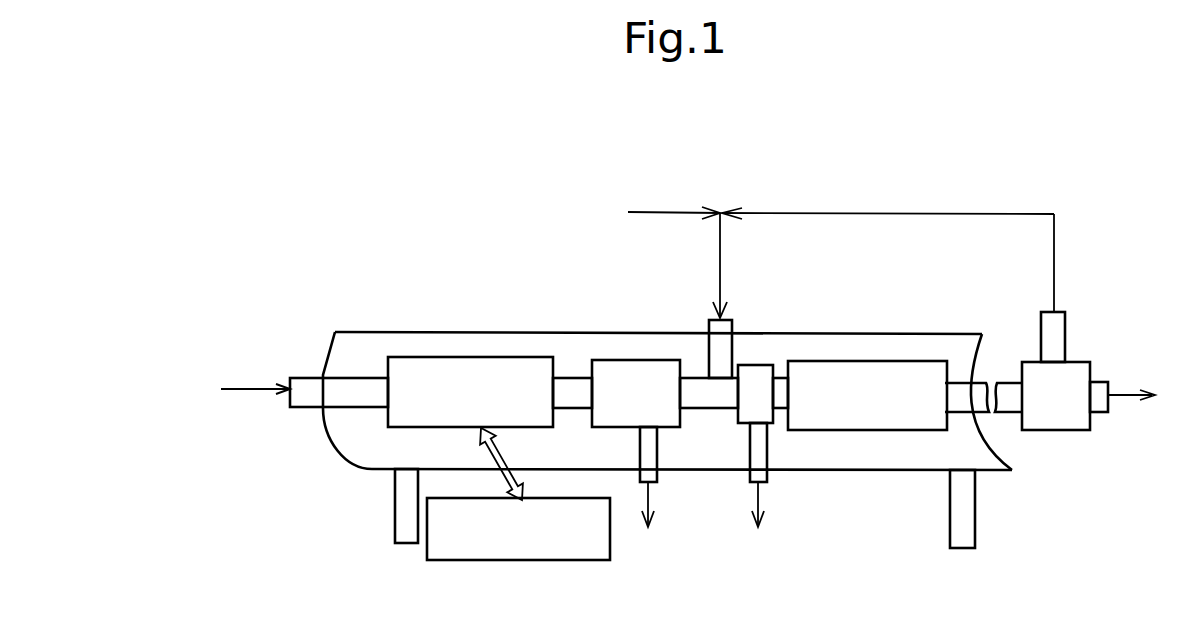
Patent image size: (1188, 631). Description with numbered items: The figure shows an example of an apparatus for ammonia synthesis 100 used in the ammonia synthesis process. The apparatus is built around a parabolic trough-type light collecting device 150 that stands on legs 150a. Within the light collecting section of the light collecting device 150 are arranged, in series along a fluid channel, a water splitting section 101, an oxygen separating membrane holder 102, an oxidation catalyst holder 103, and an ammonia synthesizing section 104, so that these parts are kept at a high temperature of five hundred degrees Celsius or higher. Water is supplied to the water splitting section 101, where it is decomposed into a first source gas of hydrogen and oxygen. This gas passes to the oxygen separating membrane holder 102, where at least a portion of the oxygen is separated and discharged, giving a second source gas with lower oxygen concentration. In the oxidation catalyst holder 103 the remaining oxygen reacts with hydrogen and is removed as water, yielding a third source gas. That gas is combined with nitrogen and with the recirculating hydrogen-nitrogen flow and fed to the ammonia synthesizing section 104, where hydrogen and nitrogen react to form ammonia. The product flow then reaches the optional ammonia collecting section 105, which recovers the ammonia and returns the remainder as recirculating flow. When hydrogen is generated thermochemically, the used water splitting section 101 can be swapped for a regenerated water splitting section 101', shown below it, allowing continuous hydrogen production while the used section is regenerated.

The apparatus for ammonia synthesis 100 is at (404, 278).
The parabolic trough-type light collecting device 150 is at (353, 340).
The legs 150a is at (405, 523).
The water splitting section 101 is at (470, 348).
The regenerated water splitting section 101' is at (522, 555).
The oxygen separating membrane holder 102 is at (613, 377).
The oxidation catalyst holder 103 is at (758, 380).
The ammonia synthesizing section 104 is at (858, 378).
The ammonia collecting section 105 is at (1075, 377).